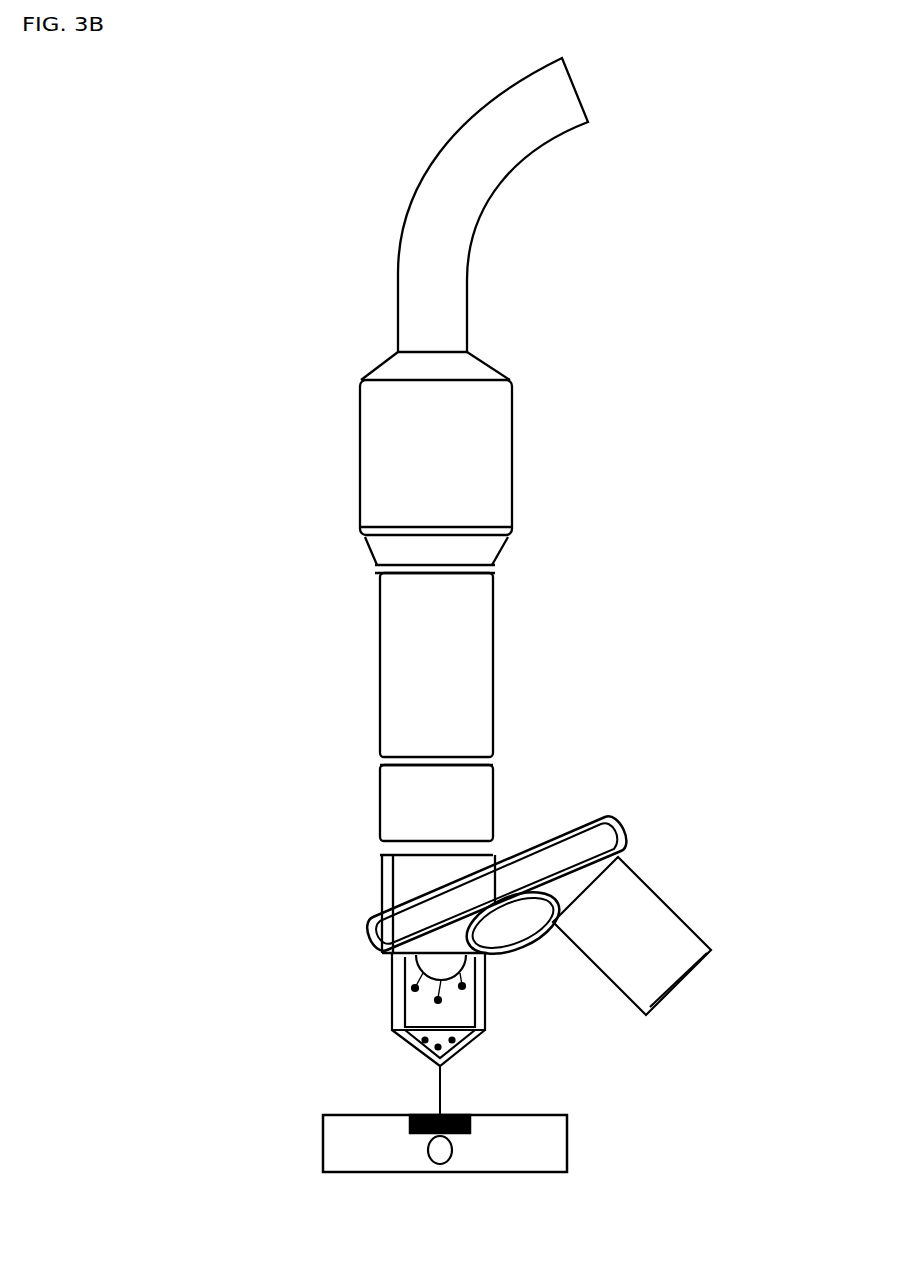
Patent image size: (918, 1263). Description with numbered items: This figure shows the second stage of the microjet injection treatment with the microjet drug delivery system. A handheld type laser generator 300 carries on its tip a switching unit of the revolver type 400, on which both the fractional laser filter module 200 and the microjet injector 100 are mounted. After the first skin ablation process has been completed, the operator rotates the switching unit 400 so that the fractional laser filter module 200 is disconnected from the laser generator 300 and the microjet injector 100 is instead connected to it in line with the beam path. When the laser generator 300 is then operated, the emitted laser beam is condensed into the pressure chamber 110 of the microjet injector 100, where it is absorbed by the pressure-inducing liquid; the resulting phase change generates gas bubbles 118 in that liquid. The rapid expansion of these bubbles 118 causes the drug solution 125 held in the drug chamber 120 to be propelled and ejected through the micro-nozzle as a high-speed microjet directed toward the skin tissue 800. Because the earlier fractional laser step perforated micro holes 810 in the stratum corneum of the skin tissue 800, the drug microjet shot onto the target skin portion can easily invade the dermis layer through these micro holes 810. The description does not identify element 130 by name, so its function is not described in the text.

The microjet injector 100 is at (419, 1032).
The pressure chamber 110 is at (483, 998).
The gas bubbles 118 is at (402, 955).
The drug chamber 120 is at (463, 1043).
The drug solution 125 is at (452, 1148).
The outer nozzle cone 130 is at (415, 1040).
The fractional laser filter module 200 is at (660, 897).
The handheld type laser generator 300 is at (380, 705).
The switching unit of the revolver type 400 is at (607, 833).
The skin tissue 800 is at (504, 1148).
The micro holes 810 is at (410, 1125).